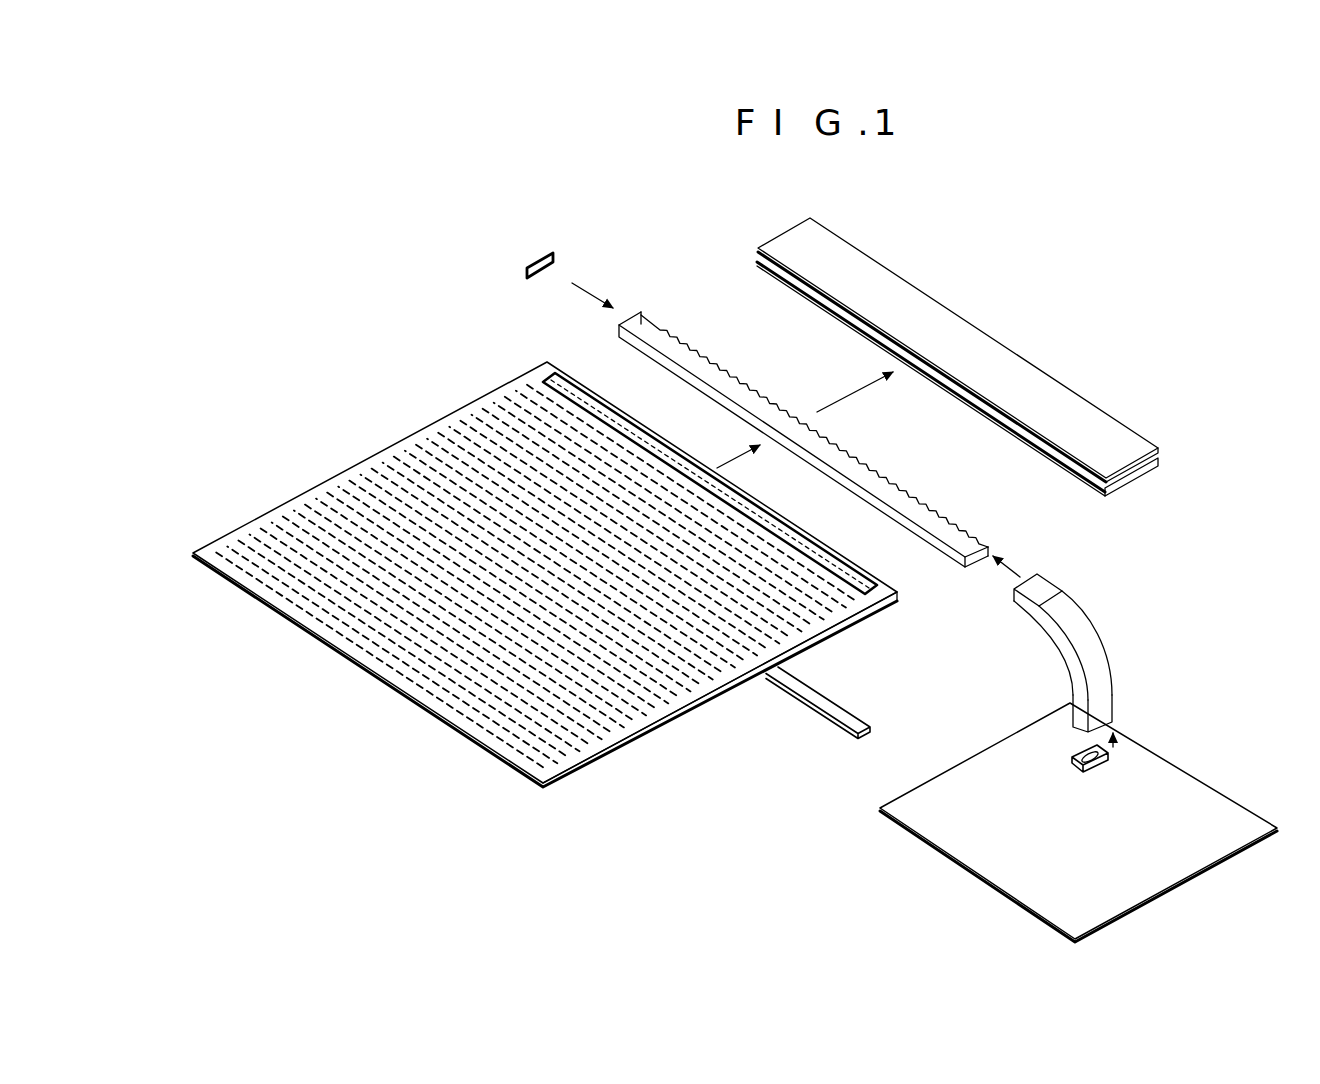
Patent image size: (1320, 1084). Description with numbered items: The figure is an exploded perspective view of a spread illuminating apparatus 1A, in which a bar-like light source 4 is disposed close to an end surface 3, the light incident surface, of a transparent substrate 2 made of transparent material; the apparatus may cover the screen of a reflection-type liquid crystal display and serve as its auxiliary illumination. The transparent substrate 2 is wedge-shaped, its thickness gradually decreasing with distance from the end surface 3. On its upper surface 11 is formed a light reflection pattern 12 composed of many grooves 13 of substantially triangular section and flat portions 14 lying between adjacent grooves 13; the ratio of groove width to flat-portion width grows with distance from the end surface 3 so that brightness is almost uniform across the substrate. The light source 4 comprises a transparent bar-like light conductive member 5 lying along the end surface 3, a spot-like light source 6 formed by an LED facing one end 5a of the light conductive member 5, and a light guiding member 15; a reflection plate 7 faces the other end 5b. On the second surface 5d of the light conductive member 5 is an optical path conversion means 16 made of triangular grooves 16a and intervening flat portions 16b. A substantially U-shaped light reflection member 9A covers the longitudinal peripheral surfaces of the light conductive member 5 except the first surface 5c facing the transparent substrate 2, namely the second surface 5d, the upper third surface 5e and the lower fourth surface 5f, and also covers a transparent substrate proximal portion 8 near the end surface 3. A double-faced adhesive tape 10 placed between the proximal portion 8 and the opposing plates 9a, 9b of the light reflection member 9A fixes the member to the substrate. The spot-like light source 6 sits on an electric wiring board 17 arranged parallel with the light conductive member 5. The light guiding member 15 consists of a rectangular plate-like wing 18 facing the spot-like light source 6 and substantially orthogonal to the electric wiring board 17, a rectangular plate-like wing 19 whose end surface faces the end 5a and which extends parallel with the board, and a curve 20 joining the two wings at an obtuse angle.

The spread illuminating apparatus 1A is at (1001, 397).
The transparent substrate 2 is at (703, 700).
The end surface 3 is at (893, 593).
The light source 4 is at (1115, 785).
The light conductive member 5 is at (800, 381).
The one end of the light conductive member 5a is at (990, 552).
The other end of the light conductive member 5b is at (630, 315).
The first surface of the light conductive member 5c is at (903, 522).
The second surface of the light conductive member 5d is at (985, 540).
The third surface of the light conductive member 5e is at (653, 332).
The fourth surface of the light conductive member 5f is at (660, 365).
The spot-like light source 6 is at (1083, 752).
The reflection plate 7 is at (525, 271).
The transparent substrate proximal portion 8 is at (862, 610).
The light reflection member 9A is at (1075, 413).
The opposing plate 9a is at (1135, 472).
The opposing plate 9b is at (1103, 455).
The double-faced adhesive tape 10 is at (815, 695).
The upper surface 11 is at (467, 418).
The light reflection pattern 12 is at (536, 534).
The groove 13 is at (398, 463).
The flat portion 14 is at (377, 473).
The light guiding member 15 is at (1156, 653).
The optical path conversion means 16 is at (752, 288).
The groove 16a is at (675, 338).
The flat portion 16b is at (673, 333).
The electric wiring board 17 is at (990, 850).
The wing 18 is at (1097, 702).
The wing 19 is at (1053, 598).
The curve 20 is at (1097, 650).